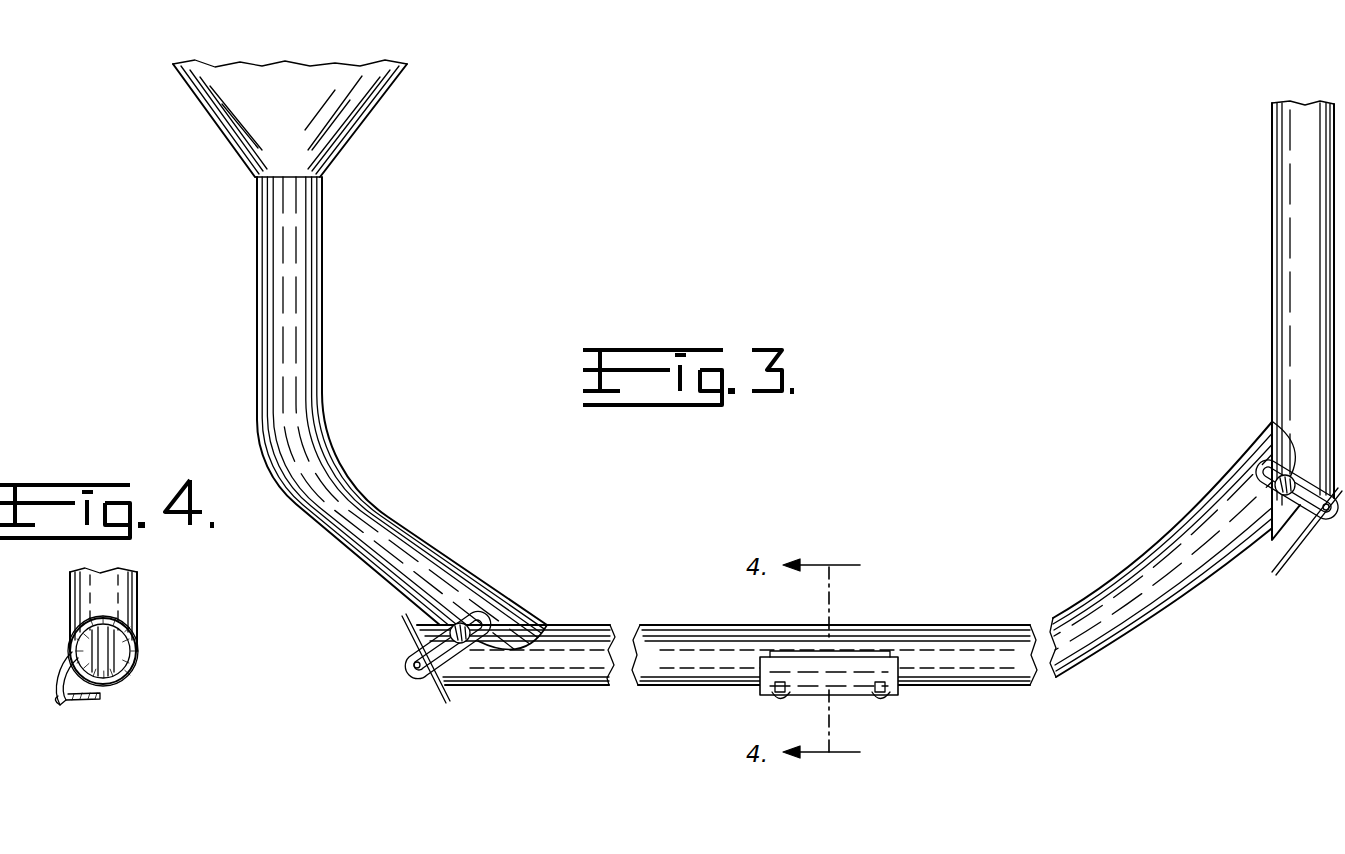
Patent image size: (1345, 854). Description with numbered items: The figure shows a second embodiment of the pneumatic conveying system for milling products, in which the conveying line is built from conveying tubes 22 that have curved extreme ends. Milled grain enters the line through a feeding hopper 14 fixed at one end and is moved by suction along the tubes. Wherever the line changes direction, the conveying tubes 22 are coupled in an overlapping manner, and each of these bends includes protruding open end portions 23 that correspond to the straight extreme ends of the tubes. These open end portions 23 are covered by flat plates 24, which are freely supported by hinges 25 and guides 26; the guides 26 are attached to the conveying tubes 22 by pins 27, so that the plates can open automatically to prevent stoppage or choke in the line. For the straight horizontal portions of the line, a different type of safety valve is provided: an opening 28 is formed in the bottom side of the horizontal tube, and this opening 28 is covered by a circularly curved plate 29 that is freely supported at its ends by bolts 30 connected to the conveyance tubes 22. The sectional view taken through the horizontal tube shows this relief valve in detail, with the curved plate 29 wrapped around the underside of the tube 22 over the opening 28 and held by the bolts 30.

In FIG. 3, the feeding hopper 14 is at (337, 130).
In FIG. 3, the conveying tubes 22 is at (332, 440).
In FIG. 4, the conveying tubes 22 is at (128, 593).
In FIG. 3, the protruding open end portions 23 is at (449, 690).
In FIG. 3, the flat plates 24 is at (406, 633).
In FIG. 3, the hinges 25 is at (410, 670).
In FIG. 3, the guides 26 is at (490, 620).
In FIG. 3, the pins 27 is at (465, 626).
In FIG. 3, the opening 28 is at (790, 656).
In FIG. 4, the opening 28 is at (119, 677).
In FIG. 3, the circularly curved plate 29 is at (850, 662).
In FIG. 4, the circularly curved plate 29 is at (94, 701).
In FIG. 3, the bolts 30 is at (780, 697).
In FIG. 4, the bolts 30 is at (60, 703).